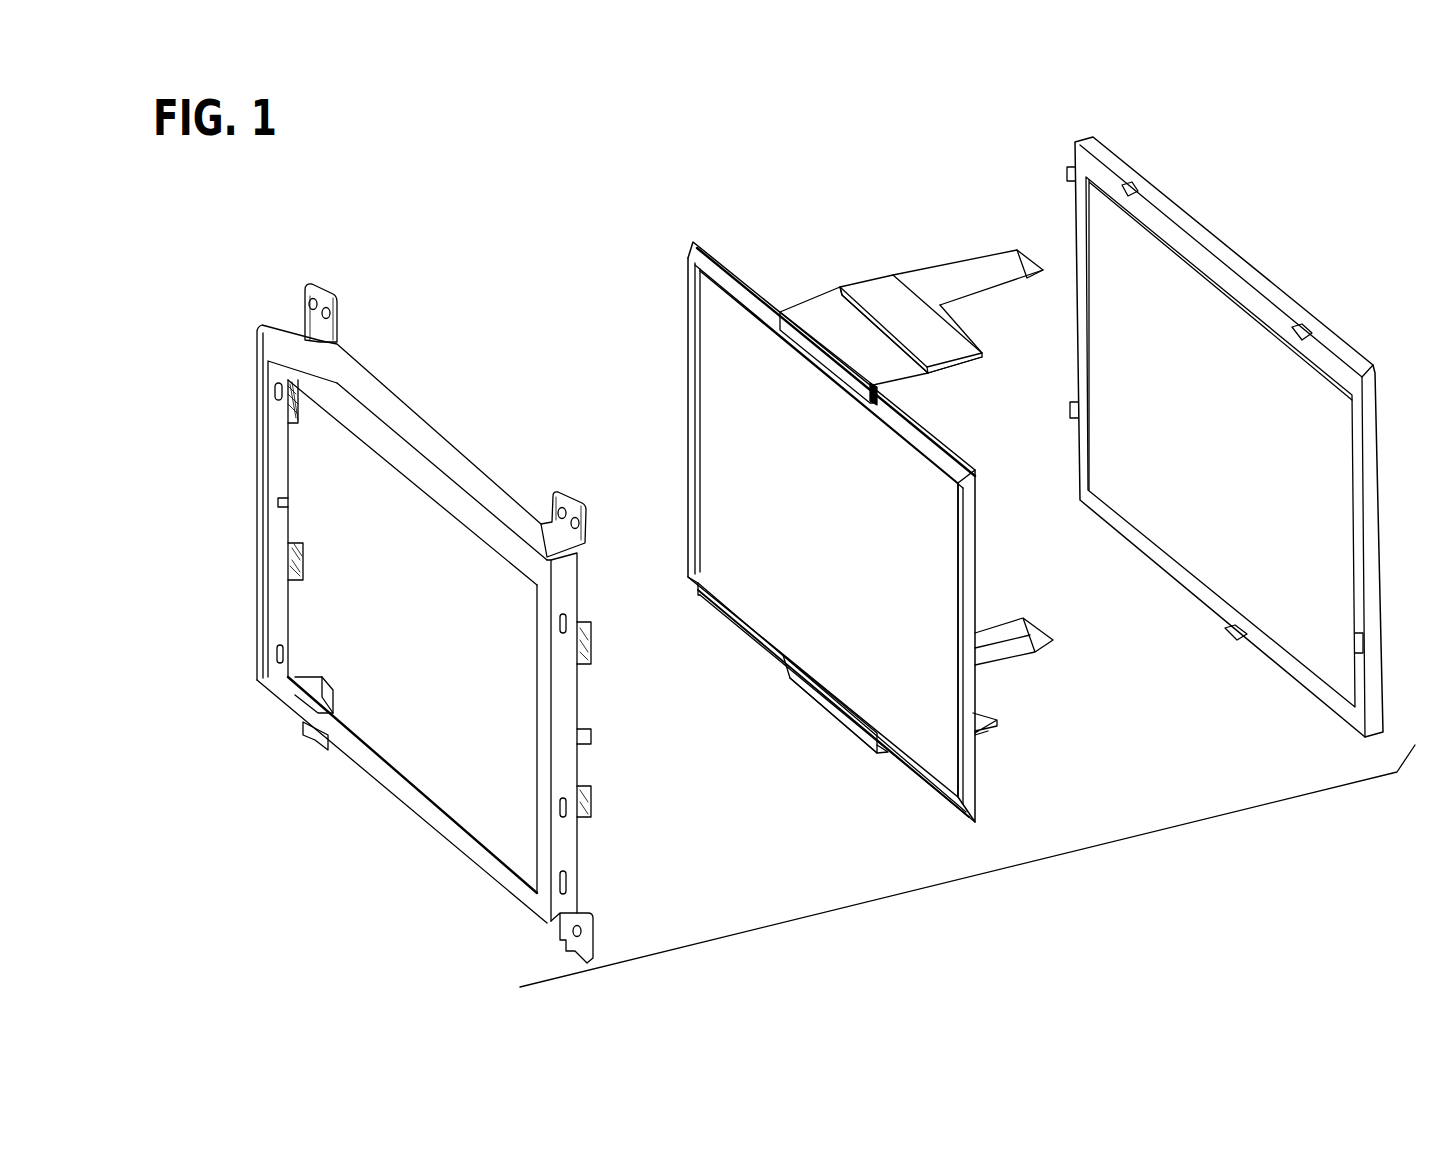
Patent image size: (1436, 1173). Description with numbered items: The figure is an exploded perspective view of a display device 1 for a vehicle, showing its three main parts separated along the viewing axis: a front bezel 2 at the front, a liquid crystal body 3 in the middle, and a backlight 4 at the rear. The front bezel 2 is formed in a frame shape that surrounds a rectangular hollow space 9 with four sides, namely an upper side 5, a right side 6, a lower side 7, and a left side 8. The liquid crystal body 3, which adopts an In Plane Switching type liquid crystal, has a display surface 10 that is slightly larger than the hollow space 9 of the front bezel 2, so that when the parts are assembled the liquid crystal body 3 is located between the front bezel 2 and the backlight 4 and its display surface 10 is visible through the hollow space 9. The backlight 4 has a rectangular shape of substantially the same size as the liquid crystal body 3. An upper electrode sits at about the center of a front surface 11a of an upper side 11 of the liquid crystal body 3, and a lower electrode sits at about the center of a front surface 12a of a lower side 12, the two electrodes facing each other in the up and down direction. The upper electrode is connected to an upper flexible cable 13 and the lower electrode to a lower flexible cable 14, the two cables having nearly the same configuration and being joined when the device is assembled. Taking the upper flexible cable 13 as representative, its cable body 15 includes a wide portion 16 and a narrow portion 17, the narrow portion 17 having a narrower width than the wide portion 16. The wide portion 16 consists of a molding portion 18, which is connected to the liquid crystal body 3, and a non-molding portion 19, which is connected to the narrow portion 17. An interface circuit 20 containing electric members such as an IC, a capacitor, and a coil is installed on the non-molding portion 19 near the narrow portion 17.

The display device 1 is at (756, 160).
The front bezel 2 is at (413, 600).
The liquid crystal body 3 is at (835, 500).
The backlight 4 is at (1135, 155).
The upper side 5 is at (423, 423).
The right side 6 is at (580, 712).
The lower side 7 is at (388, 792).
The left side 8 is at (257, 512).
The hollow space 9 is at (410, 522).
The display surface 10 is at (725, 400).
The upper side 11 is at (723, 262).
The front surface 11a is at (700, 240).
The lower side 12 is at (730, 625).
The front surface 12a is at (702, 598).
The upper flexible cable 13 is at (916, 426).
The lower flexible cable 14 is at (1000, 746).
The cable body 15 is at (896, 272).
The wide portion 16 is at (781, 307).
The narrow portion 17 is at (968, 258).
The molding portion 18 is at (880, 393).
The non-molding portion 19 is at (935, 375).
The interface circuit 20 is at (945, 338).